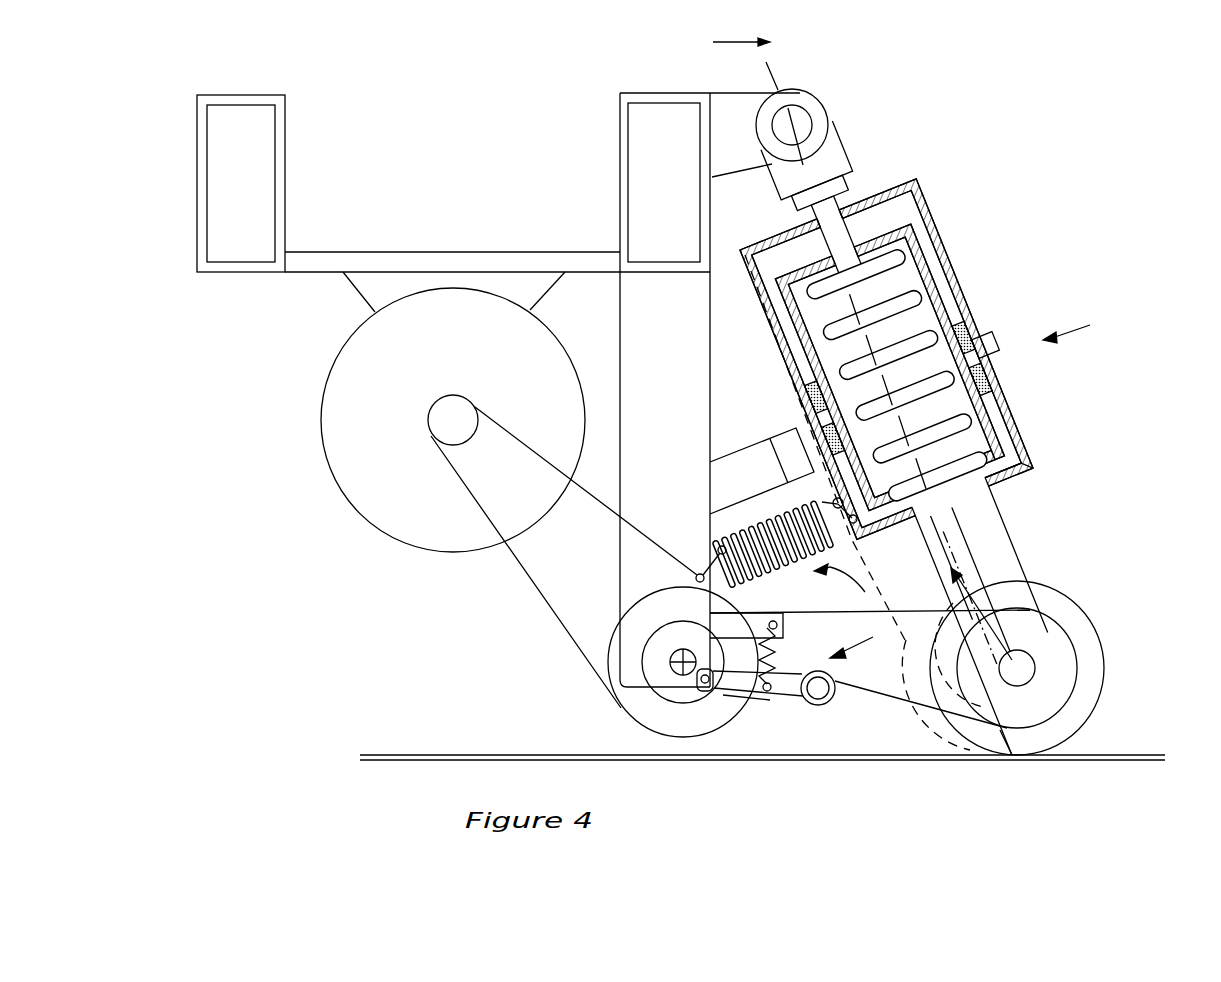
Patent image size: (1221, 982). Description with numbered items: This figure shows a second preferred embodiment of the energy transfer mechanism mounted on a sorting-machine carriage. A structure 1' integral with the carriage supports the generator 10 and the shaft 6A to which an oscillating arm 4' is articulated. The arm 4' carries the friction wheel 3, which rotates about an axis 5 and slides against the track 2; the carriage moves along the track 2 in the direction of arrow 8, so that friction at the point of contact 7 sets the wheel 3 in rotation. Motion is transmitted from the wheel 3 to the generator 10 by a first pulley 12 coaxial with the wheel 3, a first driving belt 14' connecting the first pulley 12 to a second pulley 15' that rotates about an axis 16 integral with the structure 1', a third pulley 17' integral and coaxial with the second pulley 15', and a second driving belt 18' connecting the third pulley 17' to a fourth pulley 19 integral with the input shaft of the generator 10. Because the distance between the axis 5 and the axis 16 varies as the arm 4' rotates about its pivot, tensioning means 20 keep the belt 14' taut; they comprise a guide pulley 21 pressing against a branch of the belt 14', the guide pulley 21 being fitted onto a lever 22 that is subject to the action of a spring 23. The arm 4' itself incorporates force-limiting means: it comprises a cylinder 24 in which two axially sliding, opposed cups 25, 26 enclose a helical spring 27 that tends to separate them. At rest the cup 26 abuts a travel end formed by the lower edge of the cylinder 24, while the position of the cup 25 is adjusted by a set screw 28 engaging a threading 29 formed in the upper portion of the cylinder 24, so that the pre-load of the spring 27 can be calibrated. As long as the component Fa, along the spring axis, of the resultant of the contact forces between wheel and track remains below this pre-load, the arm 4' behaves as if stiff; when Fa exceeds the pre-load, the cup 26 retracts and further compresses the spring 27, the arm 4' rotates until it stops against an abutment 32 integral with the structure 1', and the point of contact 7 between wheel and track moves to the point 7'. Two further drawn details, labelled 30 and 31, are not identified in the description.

The structure 1' is at (498, 390).
The track 2 is at (950, 747).
The friction wheel 3 is at (1093, 663).
The arm 4' is at (1079, 324).
The axis 5 is at (1018, 666).
The shaft 6A is at (798, 112).
The point of contact 7 is at (997, 640).
The point of contact 7' is at (1022, 770).
The arrow 8 is at (745, 46).
The generator 10 is at (348, 370).
The first pulley 12 is at (1075, 693).
The first driving belt 14' is at (864, 502).
The second pulley 15' is at (733, 712).
The axis 16 is at (676, 670).
The third pulley 17' is at (764, 715).
The second driving belt 18' is at (564, 557).
The fourth pulley 19 is at (447, 432).
The tensioning means 20 is at (870, 634).
The guide pulley 21 is at (842, 690).
The lever 22 is at (803, 700).
The spring 23 is at (783, 632).
The cylinder 24 is at (933, 203).
The cup 25 is at (950, 263).
The cup 26 is at (1012, 484).
The helical spring 27 is at (995, 325).
The set screw 28 is at (858, 192).
The threading 29 is at (800, 243).
The coil spring 30 is at (773, 563).
The spring force direction 31 is at (852, 584).
The abutment 32 is at (763, 457).
The axial force component Fa is at (968, 597).